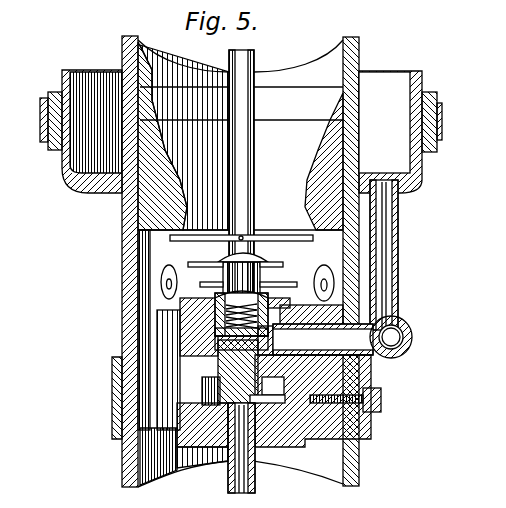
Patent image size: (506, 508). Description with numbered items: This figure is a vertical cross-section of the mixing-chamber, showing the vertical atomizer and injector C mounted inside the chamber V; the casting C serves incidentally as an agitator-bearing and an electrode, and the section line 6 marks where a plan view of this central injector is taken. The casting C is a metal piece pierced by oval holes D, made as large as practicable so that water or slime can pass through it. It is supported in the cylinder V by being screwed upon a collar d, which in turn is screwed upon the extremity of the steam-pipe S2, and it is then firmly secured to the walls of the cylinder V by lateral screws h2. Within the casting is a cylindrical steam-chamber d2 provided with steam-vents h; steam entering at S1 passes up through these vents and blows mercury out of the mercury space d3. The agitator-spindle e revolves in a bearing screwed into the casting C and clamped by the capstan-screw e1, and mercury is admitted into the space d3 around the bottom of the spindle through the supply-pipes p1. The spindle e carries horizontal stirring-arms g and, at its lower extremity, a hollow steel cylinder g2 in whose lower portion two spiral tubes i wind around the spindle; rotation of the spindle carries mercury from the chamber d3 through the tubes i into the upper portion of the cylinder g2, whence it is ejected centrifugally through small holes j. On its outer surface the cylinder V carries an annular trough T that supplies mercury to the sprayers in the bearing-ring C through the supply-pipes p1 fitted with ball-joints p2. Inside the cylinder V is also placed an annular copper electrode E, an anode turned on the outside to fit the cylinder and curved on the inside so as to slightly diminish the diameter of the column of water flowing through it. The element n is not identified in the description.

The chamber V is at (240, 80).
The annular trough T is at (400, 132).
The annular copper electrode E is at (317, 161).
The agitator-spindle e is at (254, 163).
The horizontal stirring-arms g is at (284, 242).
The hollow steel cylinder g2 is at (270, 265).
The small holes j is at (212, 264).
The spiral tubes i is at (214, 298).
The disk n is at (324, 266).
The steam-vents h is at (169, 275).
The supply-pipes p1 is at (386, 280).
The ball-joints p2 is at (413, 340).
The vertical atomizer and injector C is at (100, 334).
The oval holes D is at (168, 370).
The collar d is at (244, 390).
The cylindrical steam-chamber d2 is at (202, 404).
The mercury space d3 is at (213, 345).
The capstan-screw e1 is at (267, 390).
The lateral screws h2 is at (354, 398).
The steam inlet S1 is at (241, 448).
The steam-pipe S2 is at (255, 478).
The section line 6- 6 is at (462, 239).